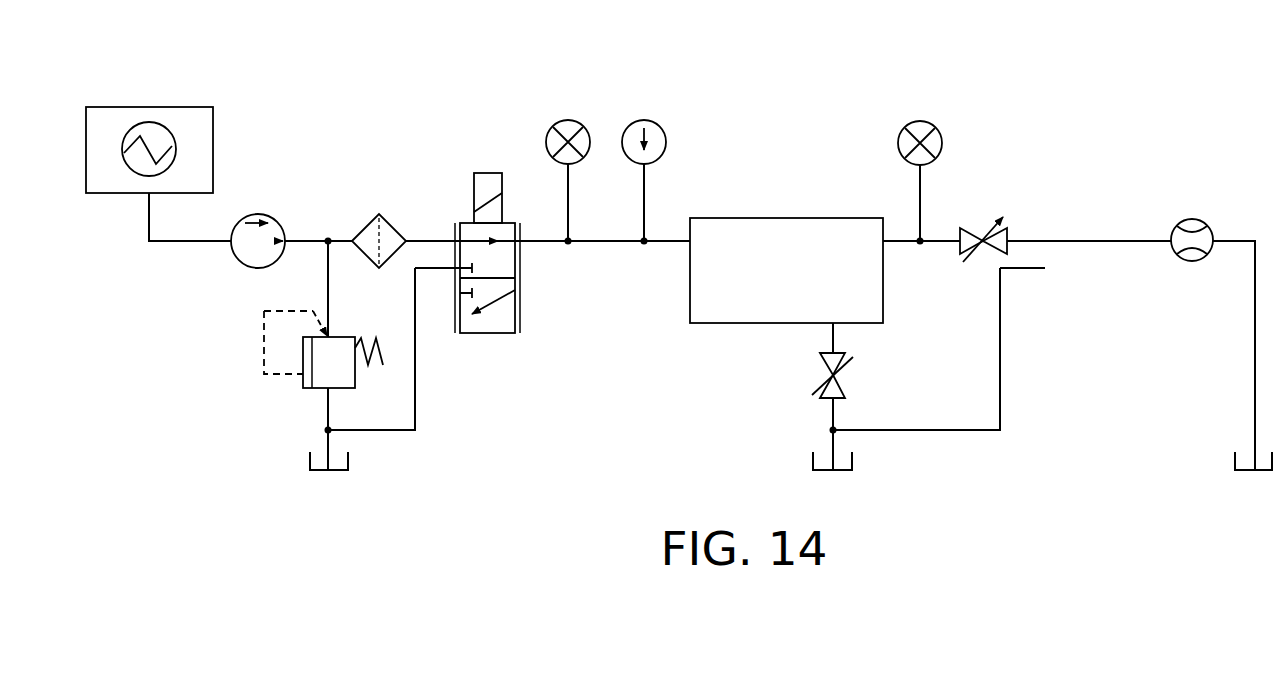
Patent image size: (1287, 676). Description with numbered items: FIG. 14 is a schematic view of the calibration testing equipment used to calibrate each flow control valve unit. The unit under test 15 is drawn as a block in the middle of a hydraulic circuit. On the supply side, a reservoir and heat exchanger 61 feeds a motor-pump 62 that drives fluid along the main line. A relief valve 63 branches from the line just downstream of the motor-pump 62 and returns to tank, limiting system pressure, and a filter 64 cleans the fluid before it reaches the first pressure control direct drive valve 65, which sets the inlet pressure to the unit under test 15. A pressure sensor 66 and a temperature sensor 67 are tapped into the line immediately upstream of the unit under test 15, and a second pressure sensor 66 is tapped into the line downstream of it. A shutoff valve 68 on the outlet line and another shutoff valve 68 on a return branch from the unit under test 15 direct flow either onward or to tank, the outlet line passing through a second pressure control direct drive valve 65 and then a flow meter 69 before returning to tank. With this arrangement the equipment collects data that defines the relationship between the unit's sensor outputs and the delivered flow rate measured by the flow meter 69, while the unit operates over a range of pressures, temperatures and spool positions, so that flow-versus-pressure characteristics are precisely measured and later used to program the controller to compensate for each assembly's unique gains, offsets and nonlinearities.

The unit under test 15 is at (786, 216).
The reservoir and heat exchanger 61 is at (186, 128).
The motor-pump 62 is at (253, 271).
The relief valve 63 is at (317, 393).
The filter 64 is at (378, 207).
The pressure control direct drive valve 65 is at (519, 339).
The pressure sensor 66 is at (569, 117).
The temperature sensor 67 is at (645, 117).
The shutoff valve 68 is at (956, 259).
The flow meter 69 is at (1199, 214).